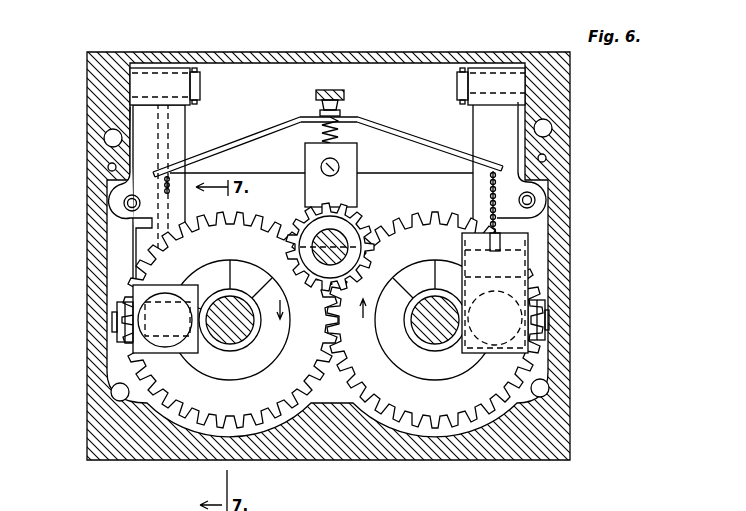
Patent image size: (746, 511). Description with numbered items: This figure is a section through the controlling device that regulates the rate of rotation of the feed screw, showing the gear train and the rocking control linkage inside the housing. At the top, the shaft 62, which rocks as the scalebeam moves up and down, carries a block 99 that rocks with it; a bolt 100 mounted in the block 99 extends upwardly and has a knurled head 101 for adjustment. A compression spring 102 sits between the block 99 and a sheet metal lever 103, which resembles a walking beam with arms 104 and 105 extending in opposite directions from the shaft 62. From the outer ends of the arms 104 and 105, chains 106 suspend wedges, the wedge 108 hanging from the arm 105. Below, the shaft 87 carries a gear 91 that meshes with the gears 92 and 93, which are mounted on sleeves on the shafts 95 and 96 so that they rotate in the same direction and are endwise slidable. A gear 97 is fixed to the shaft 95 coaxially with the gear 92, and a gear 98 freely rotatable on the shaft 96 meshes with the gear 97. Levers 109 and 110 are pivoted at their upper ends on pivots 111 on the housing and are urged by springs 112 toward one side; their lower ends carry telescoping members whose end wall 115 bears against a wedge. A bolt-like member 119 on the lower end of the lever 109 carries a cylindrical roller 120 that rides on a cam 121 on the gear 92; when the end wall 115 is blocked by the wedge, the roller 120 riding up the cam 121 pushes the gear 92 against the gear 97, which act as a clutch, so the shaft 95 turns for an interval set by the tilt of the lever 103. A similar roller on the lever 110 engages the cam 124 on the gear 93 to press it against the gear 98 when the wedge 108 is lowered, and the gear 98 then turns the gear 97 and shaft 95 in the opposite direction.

The shaft 62 is at (358, 143).
The shaft 87 is at (344, 240).
The gear 91 is at (380, 210).
The gear 92 is at (284, 215).
The gear 93 is at (448, 214).
The shaft 95 is at (220, 337).
The shaft 96 is at (428, 340).
The gear 97 is at (313, 387).
The gear 98 is at (338, 392).
The block 99 is at (345, 167).
The bolt 100 is at (340, 125).
The knurled head 101 is at (308, 88).
The compression spring 102 is at (300, 117).
The sheet metal lever 103 is at (393, 128).
The arm 104 is at (212, 160).
The arm 105 is at (418, 152).
The chain 106 is at (128, 205).
The wedge 108 is at (520, 262).
The lever 109 is at (142, 120).
The lever 110 is at (508, 118).
The pivot 111 is at (200, 73).
The spring 112 is at (128, 210).
The end wall 115 is at (135, 295).
The bolt-like member 119 is at (117, 320).
The roller 120 is at (132, 343).
The cam 121 is at (233, 362).
The cam 124 is at (445, 360).